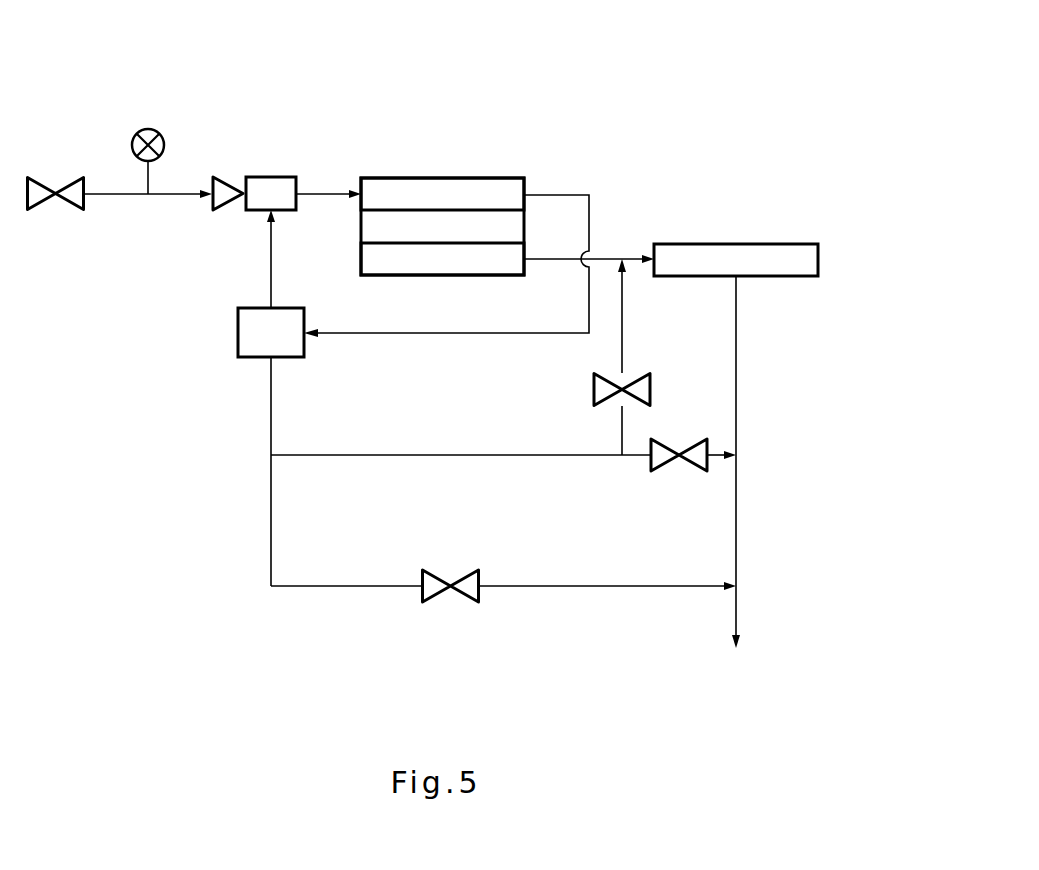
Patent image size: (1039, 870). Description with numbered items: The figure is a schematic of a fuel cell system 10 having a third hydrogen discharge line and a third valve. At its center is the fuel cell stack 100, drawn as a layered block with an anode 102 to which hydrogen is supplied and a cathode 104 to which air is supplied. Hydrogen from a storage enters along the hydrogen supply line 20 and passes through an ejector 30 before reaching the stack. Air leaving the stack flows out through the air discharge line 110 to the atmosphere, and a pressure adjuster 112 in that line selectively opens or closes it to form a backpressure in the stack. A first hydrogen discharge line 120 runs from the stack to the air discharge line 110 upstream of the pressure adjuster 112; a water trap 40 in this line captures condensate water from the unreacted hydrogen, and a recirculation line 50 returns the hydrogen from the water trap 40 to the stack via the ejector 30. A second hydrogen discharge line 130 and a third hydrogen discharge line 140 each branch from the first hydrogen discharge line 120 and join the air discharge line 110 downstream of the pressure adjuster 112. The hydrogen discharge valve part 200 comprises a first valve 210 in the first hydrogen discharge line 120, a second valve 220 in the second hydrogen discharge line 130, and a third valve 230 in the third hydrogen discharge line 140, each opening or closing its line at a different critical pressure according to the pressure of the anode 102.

The fuel cell system 10 is at (126, 20).
The hydrogen supply line 20 is at (181, 196).
The ejector 30 is at (271, 177).
The water trap 40 is at (238, 332).
The recirculation line 50 is at (270, 260).
The fuel cell stack 100 is at (411, 177).
The anode 102 is at (441, 178).
The cathode 104 is at (359, 259).
The air discharge line 110 is at (736, 356).
The pressure adjuster 112 is at (818, 259).
The first hydrogen discharge line 120 is at (622, 323).
The second hydrogen discharge line 130 is at (474, 457).
The third hydrogen discharge line 140 is at (608, 588).
The hydrogen discharge valve part 200 is at (631, 470).
The first valve 210 is at (609, 407).
The second valve 220 is at (676, 480).
The third valve 230 is at (440, 603).